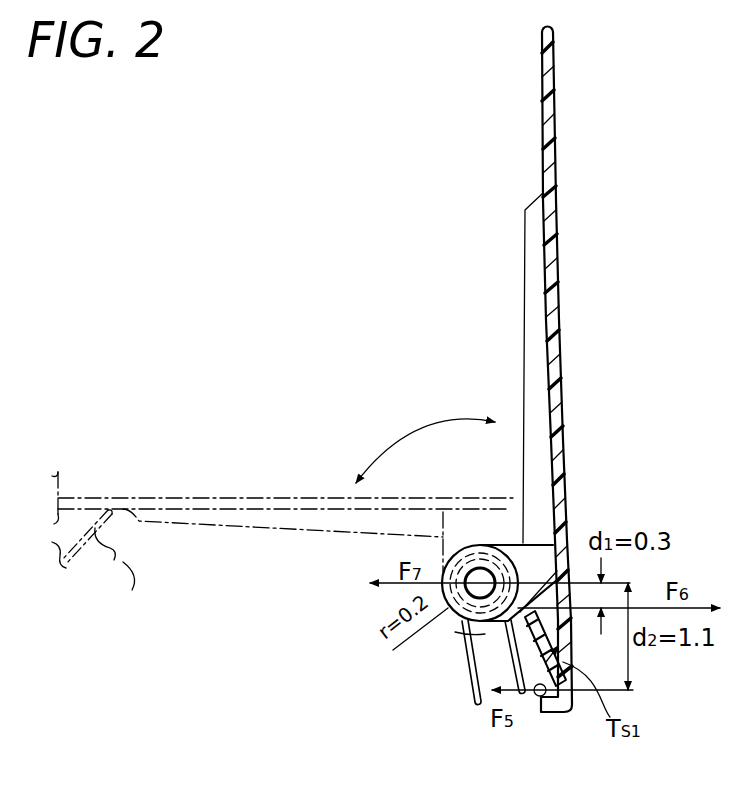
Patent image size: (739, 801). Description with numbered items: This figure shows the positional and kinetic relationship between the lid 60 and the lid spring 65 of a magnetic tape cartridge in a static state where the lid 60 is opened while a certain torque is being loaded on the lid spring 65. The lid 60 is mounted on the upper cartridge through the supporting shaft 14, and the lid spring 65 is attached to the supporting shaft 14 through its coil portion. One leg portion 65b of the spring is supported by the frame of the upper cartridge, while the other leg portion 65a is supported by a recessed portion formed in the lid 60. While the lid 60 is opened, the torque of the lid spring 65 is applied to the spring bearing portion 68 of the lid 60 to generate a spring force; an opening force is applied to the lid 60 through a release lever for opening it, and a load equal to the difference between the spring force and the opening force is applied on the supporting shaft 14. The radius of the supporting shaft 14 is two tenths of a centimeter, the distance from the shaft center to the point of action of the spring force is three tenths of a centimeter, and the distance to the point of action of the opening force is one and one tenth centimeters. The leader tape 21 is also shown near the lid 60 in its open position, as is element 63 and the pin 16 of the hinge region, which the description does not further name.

The lid 60 is at (158, 496).
The supporting shaft 14 is at (473, 543).
The lid spring 65 is at (505, 553).
The hatched engagement bar 63 is at (537, 556).
The spring bearing portion 68 is at (483, 633).
The leg portion 65a is at (525, 694).
The leg portion 65b is at (470, 690).
The pin 16 is at (545, 698).
The leader tape 21 is at (110, 536).